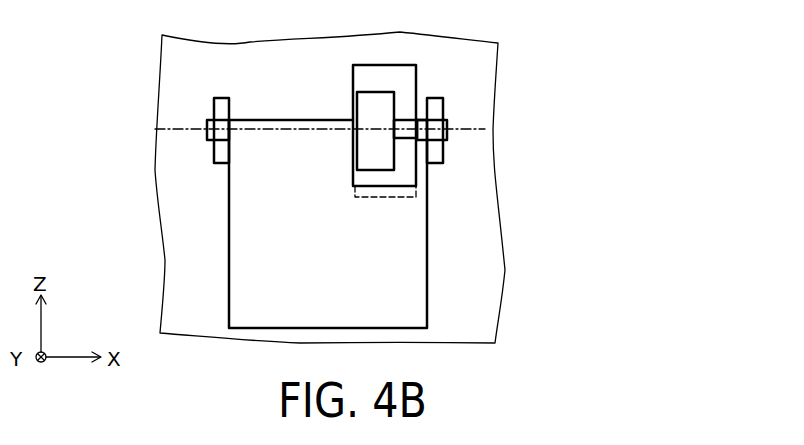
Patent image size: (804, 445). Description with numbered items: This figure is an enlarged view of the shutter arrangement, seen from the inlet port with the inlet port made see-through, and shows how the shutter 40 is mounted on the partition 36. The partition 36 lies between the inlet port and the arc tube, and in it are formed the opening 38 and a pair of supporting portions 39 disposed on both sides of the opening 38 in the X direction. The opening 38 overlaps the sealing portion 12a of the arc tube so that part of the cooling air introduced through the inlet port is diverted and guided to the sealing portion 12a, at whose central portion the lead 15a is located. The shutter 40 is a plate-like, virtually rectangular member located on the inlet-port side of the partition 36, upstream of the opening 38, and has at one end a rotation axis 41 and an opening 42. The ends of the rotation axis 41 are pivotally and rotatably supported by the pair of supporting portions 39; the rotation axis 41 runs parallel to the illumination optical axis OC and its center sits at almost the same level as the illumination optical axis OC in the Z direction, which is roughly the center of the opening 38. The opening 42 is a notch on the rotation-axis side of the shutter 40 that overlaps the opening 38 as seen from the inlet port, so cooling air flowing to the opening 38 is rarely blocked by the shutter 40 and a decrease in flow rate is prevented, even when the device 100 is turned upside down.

The optical device / lens driving apparatus 100 is at (640, 22).
The partition 36 is at (490, 274).
The illumination optical axis OC is at (482, 129).
The shutter 40 is at (424, 247).
The supporting portions 39 is at (217, 153).
The rotation axis 41 is at (172, 129).
The opening 38 is at (410, 70).
The opening 42 is at (408, 172).
The sealing portion 12a is at (362, 108).
The lead 15a is at (407, 122).